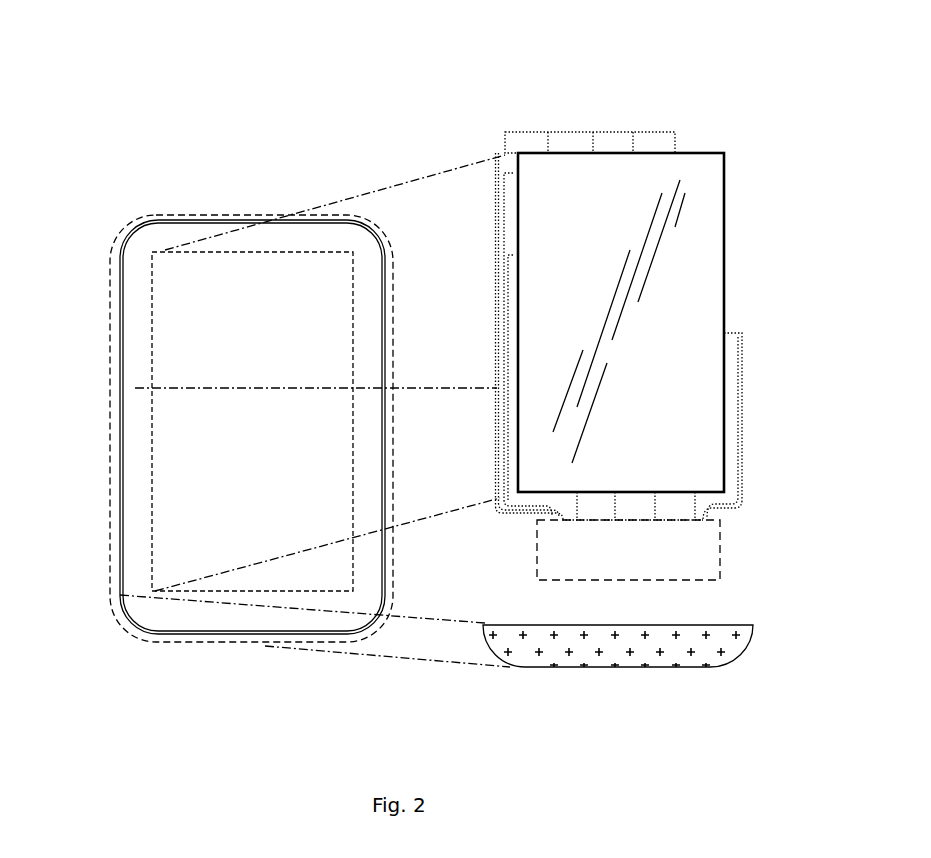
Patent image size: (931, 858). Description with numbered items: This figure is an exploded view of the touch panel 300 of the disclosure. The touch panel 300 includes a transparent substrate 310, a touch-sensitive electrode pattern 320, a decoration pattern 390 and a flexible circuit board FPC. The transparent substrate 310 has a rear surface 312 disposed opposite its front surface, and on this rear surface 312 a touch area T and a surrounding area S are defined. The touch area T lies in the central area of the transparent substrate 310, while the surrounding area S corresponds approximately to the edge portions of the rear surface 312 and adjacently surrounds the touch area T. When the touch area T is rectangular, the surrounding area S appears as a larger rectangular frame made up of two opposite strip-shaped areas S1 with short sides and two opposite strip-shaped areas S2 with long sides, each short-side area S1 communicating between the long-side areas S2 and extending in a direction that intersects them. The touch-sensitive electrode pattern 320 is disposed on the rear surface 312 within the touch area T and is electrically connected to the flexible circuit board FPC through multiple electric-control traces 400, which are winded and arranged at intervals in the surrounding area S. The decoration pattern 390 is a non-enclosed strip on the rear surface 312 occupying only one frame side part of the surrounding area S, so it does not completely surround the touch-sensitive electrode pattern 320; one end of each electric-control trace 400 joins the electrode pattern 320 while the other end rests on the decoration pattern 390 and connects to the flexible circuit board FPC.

The touch panel 300 is at (92, 92).
The transparent substrate 310 is at (125, 216).
The rear surface 312 is at (176, 433).
The touch-sensitive electrode pattern 320 is at (708, 215).
The decoration pattern 390 is at (497, 612).
The electric-control traces 400 is at (528, 128).
The strip-shaped areas with short sides S1 is at (188, 240).
The strip-shaped areas with long sides S2 is at (133, 318).
The touch area T is at (298, 238).
The surrounding area S is at (210, 660).
The flexible circuit board FPC is at (692, 542).